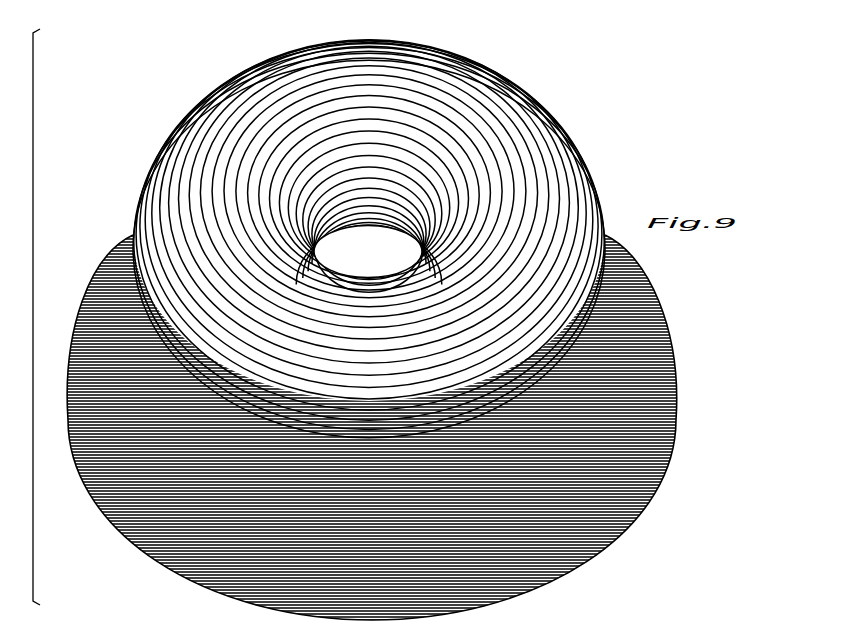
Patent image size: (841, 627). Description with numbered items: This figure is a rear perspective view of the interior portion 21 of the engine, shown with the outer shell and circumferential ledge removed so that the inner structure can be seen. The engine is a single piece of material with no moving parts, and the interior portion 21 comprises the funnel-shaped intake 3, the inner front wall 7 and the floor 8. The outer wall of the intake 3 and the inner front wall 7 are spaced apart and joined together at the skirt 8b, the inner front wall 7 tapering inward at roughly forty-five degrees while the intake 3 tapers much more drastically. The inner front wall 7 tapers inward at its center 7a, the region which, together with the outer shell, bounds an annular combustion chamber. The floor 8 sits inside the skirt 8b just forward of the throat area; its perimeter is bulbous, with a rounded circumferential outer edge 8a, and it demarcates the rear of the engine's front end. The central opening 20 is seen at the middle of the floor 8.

The funnel-shaped intake 3 is at (398, 398).
The inner front wall 7 is at (137, 500).
The center of the inner front wall 7a is at (668, 322).
The floor 8 is at (372, 229).
The rounded circumferential outer edge 8a is at (513, 63).
The skirt 8b is at (91, 279).
The central opening 20 is at (360, 247).
The interior portion of the engine 21 is at (30, 286).